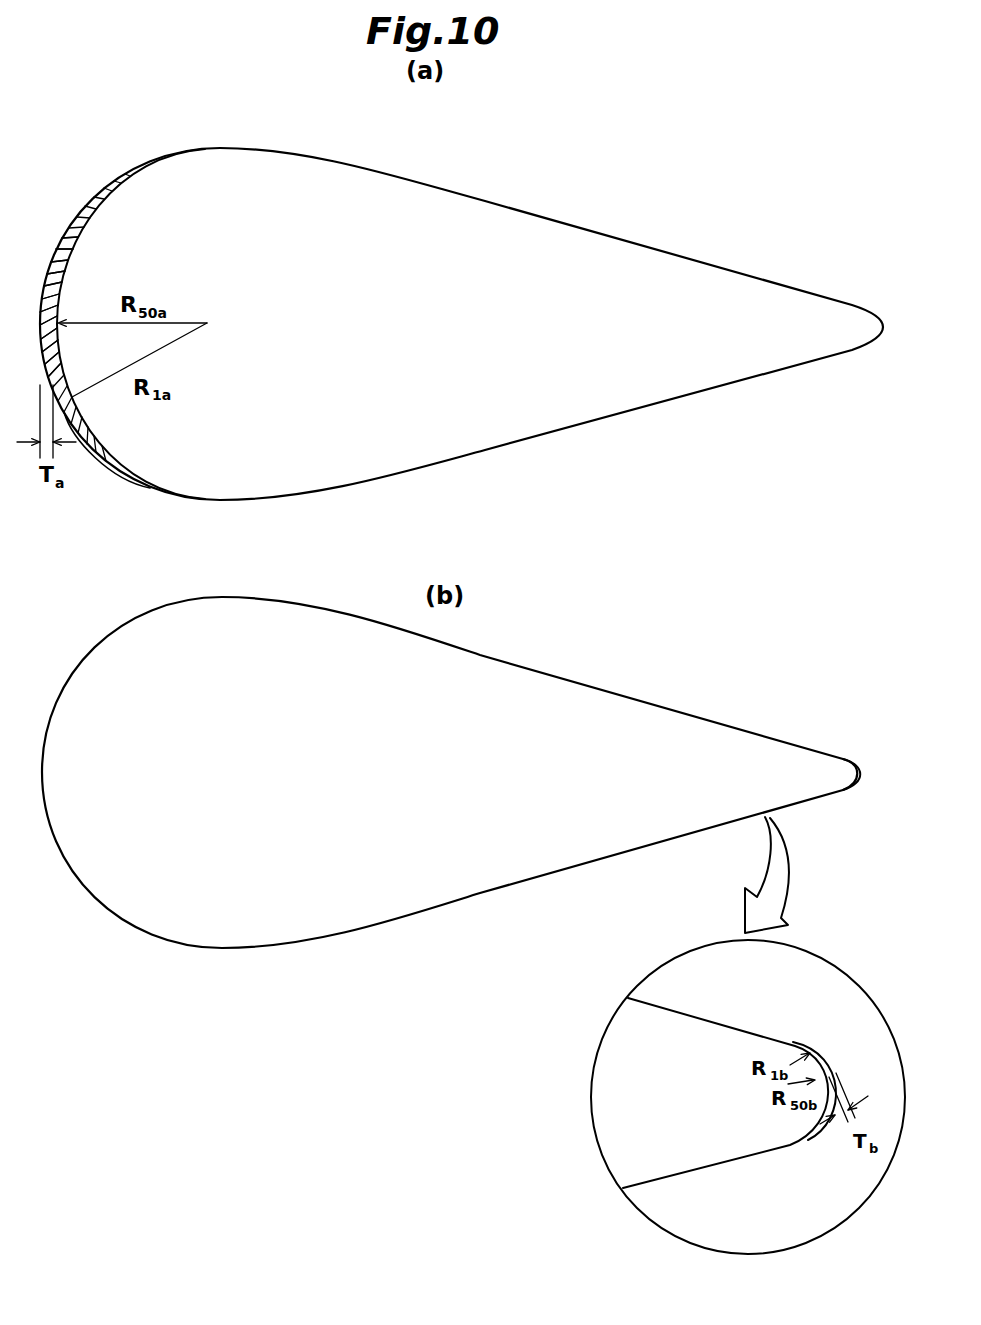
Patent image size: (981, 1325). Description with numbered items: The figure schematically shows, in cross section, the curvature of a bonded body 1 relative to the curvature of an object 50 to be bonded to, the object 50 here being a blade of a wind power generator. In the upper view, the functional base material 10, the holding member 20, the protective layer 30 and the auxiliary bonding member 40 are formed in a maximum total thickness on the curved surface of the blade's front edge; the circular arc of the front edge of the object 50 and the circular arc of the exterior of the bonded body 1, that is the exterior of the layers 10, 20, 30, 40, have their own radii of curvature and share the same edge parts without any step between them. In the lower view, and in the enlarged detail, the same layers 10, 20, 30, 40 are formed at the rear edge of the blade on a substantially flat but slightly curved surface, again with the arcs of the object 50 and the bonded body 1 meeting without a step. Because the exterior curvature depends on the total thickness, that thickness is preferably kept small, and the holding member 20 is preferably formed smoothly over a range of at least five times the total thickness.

The bonded body 1 is at (518, 188).
The functional base material 10 is at (53, 256).
The holding member 20 is at (125, 198).
The protective layer 30 is at (121, 223).
The auxiliary bonding member 40 is at (122, 249).
The object to be bonded to 50 is at (432, 428).